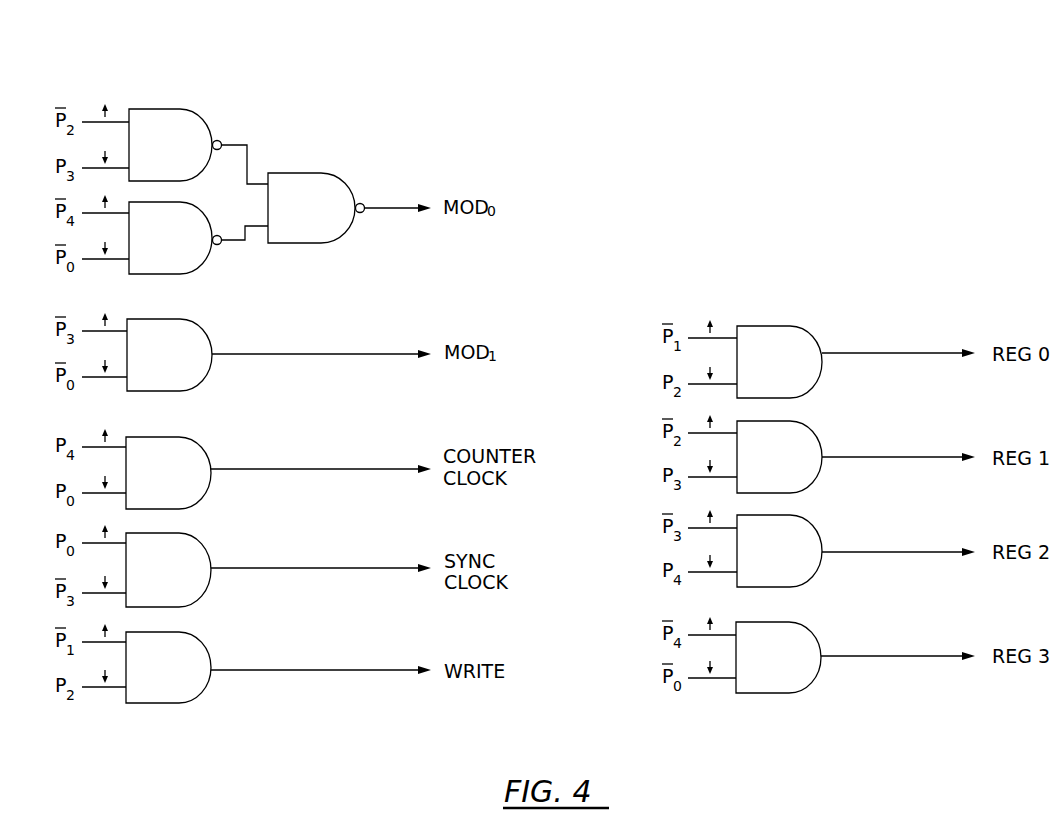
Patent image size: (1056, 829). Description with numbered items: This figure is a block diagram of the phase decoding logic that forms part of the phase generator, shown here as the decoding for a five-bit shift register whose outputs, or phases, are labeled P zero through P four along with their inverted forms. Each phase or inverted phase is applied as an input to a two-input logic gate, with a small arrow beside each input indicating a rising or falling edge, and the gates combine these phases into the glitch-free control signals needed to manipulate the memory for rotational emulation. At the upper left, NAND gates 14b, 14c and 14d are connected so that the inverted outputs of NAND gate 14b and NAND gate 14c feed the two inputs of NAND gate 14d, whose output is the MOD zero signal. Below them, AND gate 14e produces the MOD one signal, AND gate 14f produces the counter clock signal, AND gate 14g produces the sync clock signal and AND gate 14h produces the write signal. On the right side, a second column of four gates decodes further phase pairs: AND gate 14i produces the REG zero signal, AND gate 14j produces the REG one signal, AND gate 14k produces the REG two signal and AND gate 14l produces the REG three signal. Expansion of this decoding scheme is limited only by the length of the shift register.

The NAND gate 14b is at (198, 146).
The NAND gate 14c is at (198, 238).
The NAND gate 14d is at (349, 208).
The AND gate 14e is at (279, 355).
The AND gate 14f is at (278, 473).
The AND gate 14g is at (278, 570).
The AND gate 14h is at (278, 667).
The AND gate 14i is at (856, 362).
The AND gate 14j is at (856, 457).
The AND gate 14k is at (856, 551).
The AND gate 14l is at (855, 657).